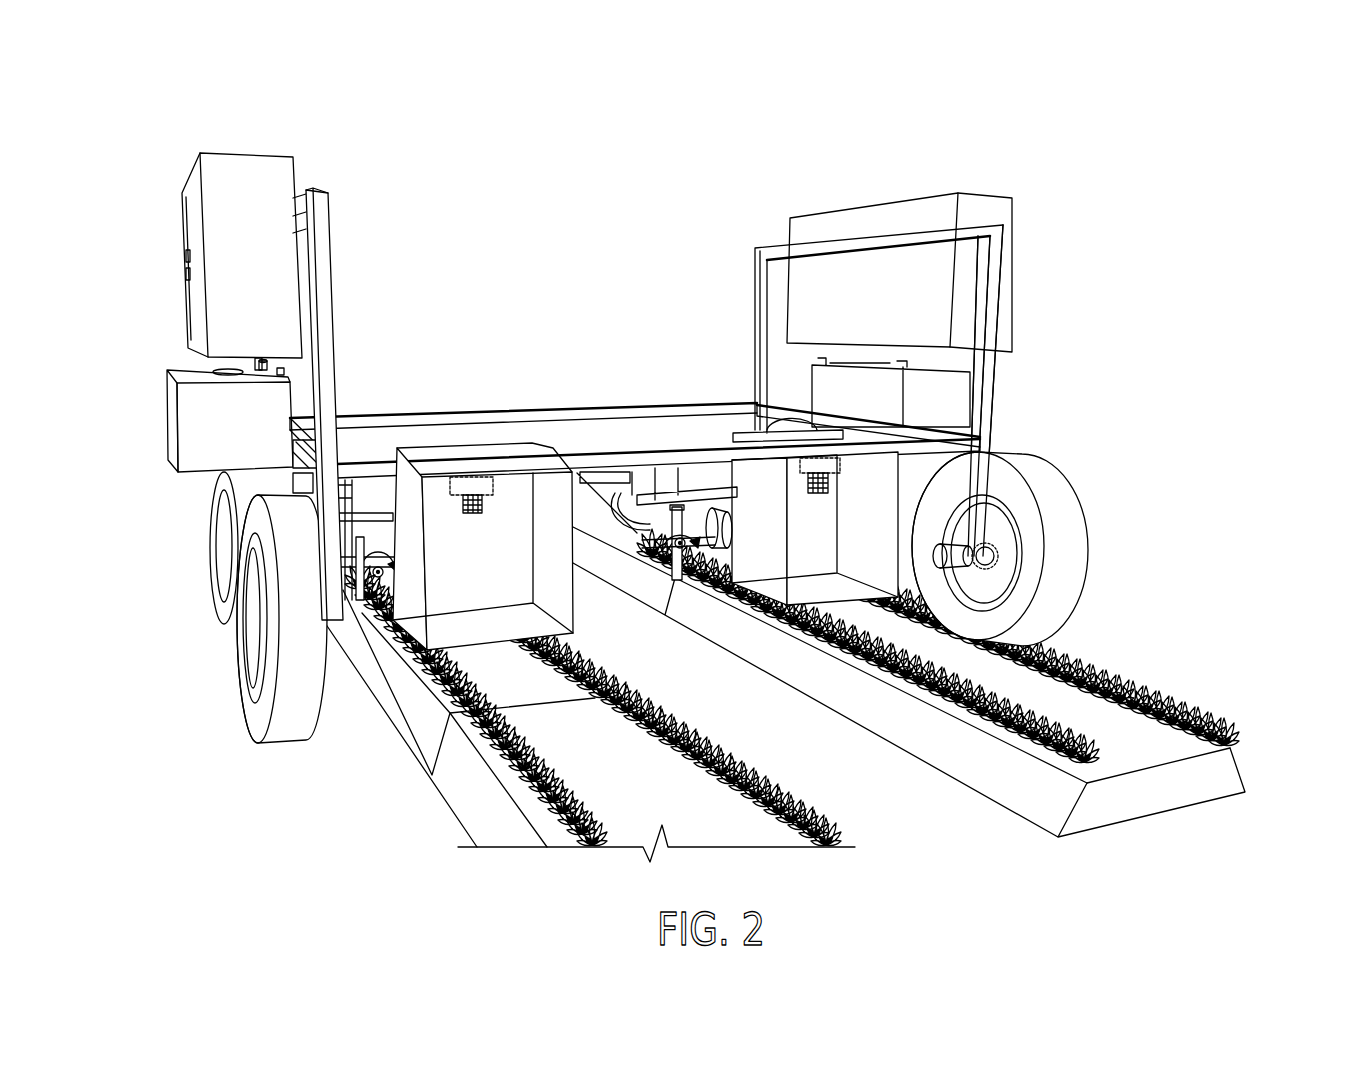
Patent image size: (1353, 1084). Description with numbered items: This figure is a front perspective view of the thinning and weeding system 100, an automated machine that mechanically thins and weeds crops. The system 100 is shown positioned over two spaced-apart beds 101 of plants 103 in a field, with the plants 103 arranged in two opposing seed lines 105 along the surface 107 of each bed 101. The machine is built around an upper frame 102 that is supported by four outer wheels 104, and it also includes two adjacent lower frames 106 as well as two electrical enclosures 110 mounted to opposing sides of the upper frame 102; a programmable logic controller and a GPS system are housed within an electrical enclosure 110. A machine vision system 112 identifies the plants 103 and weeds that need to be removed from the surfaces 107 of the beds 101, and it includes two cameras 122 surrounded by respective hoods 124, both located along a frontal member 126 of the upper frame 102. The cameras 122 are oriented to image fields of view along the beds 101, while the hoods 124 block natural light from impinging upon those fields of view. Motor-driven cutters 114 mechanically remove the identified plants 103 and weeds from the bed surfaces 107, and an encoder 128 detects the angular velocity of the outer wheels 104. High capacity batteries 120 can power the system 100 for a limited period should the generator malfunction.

The thinning and weeding system 100 is at (186, 90).
The bed 101 is at (1245, 772).
The upper frame 102 is at (995, 305).
The plant 103 is at (1138, 747).
The outer wheel 104 is at (1077, 500).
The seed line 105 is at (1075, 657).
The lower frame 106 is at (603, 548).
The surface 107 is at (1160, 733).
The electrical enclosure 110 is at (992, 222).
The machine vision system 112 is at (487, 445).
The cutter 114 is at (360, 537).
The high capacity battery 120 is at (186, 433).
The camera 122 is at (447, 487).
The hood 124 is at (440, 593).
The frontal member 126 is at (699, 492).
The encoder 128 is at (958, 567).